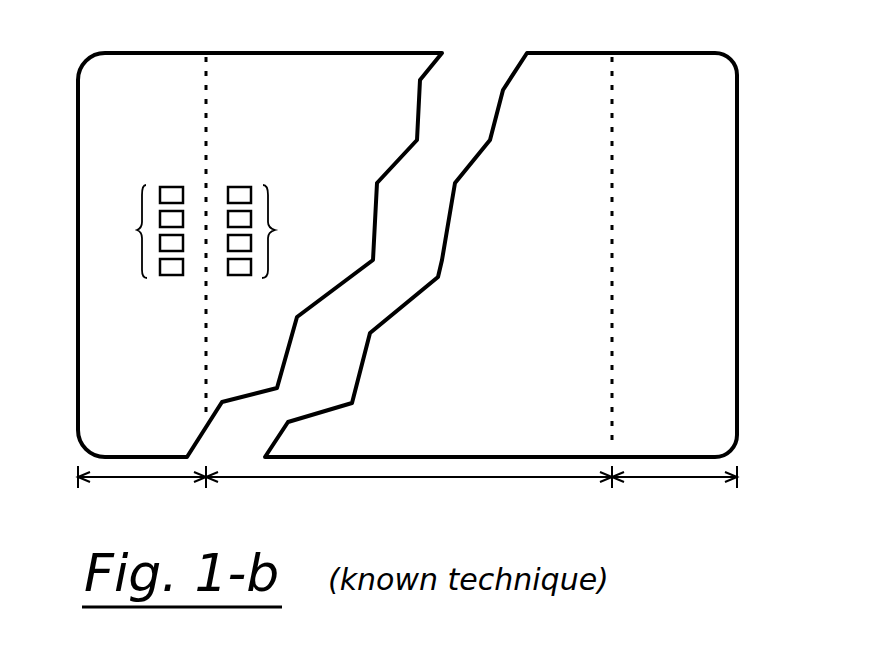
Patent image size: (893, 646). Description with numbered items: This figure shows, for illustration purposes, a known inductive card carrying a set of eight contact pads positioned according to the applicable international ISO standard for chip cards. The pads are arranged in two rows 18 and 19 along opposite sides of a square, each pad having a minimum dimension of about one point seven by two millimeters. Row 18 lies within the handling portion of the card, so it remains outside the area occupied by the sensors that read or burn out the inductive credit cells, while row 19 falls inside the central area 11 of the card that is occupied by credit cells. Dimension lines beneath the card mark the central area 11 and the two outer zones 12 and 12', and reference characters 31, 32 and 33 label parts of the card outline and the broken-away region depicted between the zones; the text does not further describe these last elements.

The central area 11 is at (395, 478).
The edge zone of card 12 is at (142, 506).
The opposite edge zone of card 12' is at (674, 507).
The row of contact pads 18 is at (137, 229).
The row of contact pads 19 is at (275, 229).
The card 31 is at (569, 50).
The break line 32 is at (455, 450).
The lateral edge of card 33 is at (78, 290).